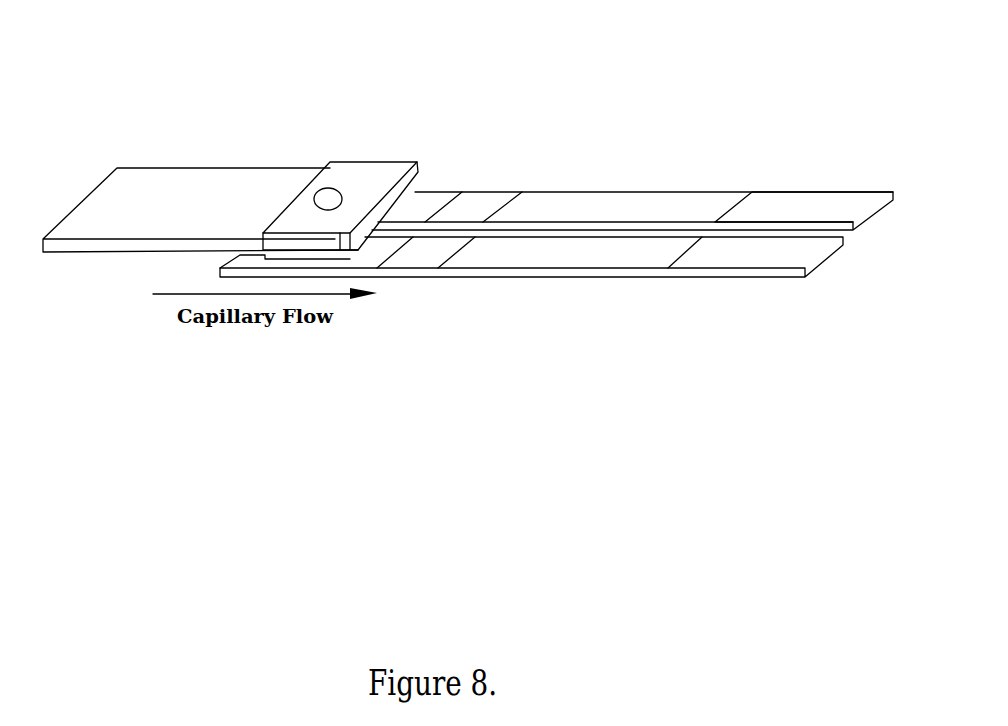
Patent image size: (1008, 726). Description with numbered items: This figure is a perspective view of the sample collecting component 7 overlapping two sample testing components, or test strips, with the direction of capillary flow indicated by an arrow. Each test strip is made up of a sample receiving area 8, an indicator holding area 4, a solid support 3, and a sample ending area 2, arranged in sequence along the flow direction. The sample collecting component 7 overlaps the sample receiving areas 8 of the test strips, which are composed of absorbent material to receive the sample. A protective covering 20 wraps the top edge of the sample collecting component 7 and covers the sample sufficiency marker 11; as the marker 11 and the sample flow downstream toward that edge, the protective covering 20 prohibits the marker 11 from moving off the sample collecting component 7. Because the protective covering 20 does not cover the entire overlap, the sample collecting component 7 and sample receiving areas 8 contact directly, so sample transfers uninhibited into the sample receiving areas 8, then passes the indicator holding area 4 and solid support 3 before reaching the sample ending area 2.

The sample ending area 2 is at (778, 212).
The solid support 3 is at (590, 203).
The indicator holding area 4 is at (488, 207).
The sample collecting component 7 is at (145, 193).
The sample receiving area 8 is at (433, 207).
The sample sufficiency marker 11 is at (328, 197).
The protective covering 20 is at (405, 161).